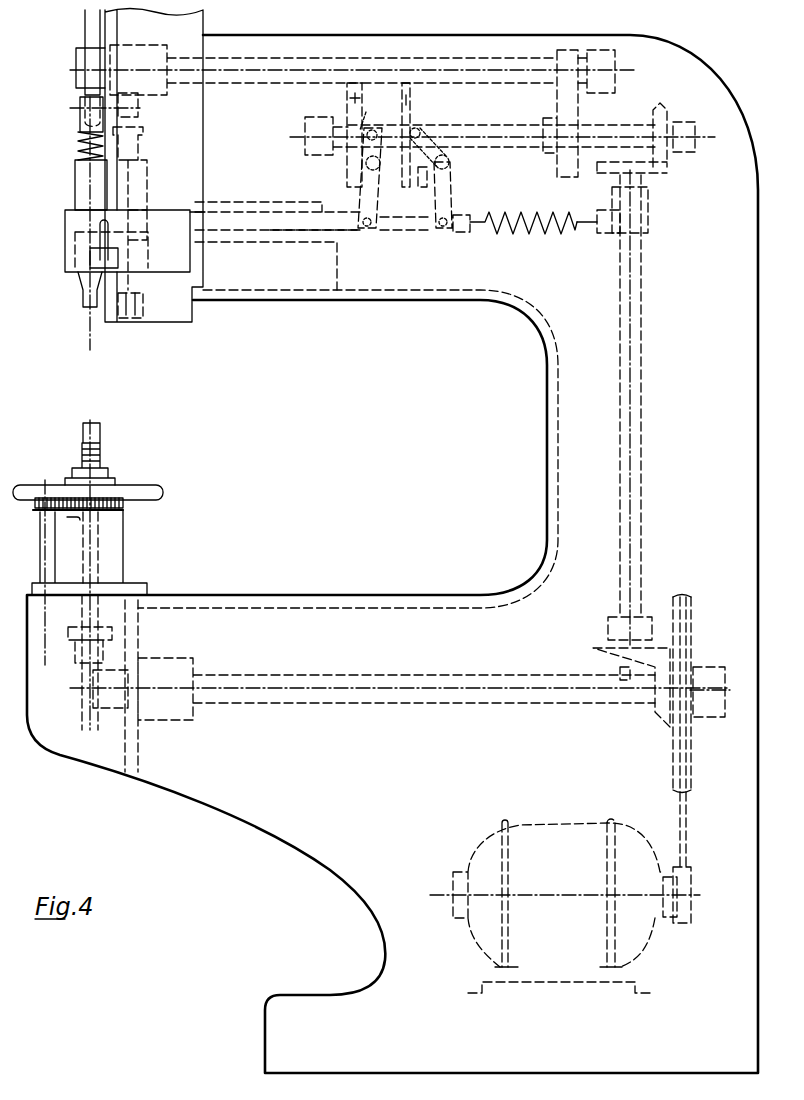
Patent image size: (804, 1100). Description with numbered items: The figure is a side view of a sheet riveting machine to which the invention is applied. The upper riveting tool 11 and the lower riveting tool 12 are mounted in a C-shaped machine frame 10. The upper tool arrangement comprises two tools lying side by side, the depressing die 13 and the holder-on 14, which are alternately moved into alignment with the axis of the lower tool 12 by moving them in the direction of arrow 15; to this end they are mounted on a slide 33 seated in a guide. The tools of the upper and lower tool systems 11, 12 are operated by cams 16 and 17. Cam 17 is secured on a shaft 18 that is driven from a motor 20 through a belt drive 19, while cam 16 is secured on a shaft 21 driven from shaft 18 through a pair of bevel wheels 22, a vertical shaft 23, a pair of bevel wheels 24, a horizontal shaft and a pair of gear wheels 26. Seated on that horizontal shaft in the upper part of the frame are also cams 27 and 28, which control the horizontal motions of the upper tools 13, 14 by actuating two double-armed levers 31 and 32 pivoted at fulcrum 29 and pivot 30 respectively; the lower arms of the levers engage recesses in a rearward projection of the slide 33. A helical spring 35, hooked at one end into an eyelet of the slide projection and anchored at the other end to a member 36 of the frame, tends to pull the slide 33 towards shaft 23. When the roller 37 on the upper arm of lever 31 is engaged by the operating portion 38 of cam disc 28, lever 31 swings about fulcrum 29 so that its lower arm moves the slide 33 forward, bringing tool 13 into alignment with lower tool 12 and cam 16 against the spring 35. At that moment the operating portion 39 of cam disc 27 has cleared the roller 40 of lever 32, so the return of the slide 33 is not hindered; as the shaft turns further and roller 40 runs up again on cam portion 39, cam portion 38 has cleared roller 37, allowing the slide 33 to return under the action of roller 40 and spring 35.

The C-shaped machine frame 10 is at (330, 848).
The upper riveting tool 11 is at (70, 243).
The lower riveting tool 12 is at (63, 460).
The depressing die 13 is at (130, 318).
The holder-on 14 is at (84, 292).
The arrow 15 is at (30, 145).
The cam 16 is at (86, 27).
The cam 17 is at (76, 722).
The shaft 18 is at (342, 692).
The belt drive 19 is at (687, 870).
The motor 20 is at (637, 950).
The shaft 21 is at (442, 62).
The pair of bevel wheels 22 is at (657, 683).
The vertical shaft 23 is at (636, 400).
The pair of bevel wheels 24 is at (665, 170).
The pair of gear wheels 26 is at (555, 92).
The cam 27 is at (350, 98).
The cam 28 is at (408, 100).
The fulcrum 29 is at (450, 163).
The pivot 30 is at (365, 163).
The double-armed lever 31 is at (451, 190).
The double-armed lever 32 is at (379, 200).
The slide 33 is at (235, 218).
The helical spring 35 is at (523, 236).
The member of the frame 36 is at (609, 233).
The roller 37 is at (425, 131).
The operating portion of cam disc 38 is at (424, 190).
The operating portion of cam disc 39 is at (366, 112).
The roller 40 is at (375, 129).